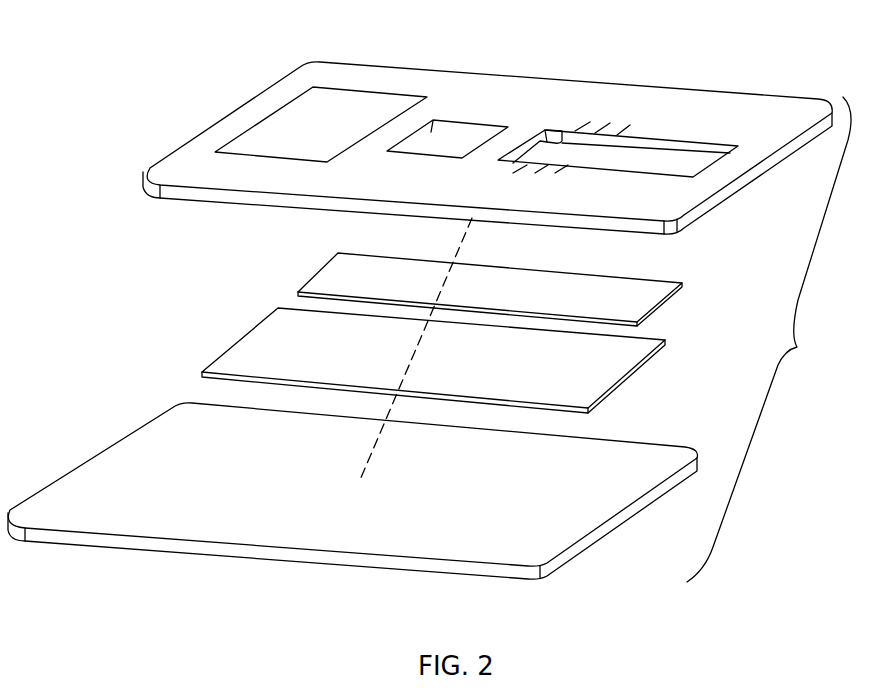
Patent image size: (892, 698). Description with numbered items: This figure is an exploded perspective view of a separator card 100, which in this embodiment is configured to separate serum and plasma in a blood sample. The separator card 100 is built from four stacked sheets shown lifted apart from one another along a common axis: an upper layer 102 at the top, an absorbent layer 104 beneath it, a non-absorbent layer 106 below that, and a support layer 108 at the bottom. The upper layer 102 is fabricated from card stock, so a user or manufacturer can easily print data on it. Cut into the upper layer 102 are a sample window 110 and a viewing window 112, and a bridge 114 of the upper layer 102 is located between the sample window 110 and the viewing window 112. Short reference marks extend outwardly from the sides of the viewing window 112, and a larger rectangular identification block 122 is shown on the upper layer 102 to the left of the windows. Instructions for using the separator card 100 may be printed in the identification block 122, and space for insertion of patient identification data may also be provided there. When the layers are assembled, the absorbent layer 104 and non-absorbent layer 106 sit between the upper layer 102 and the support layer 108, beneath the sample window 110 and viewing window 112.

The separator card 100 is at (769, 339).
The upper layer 102 is at (202, 132).
The absorbent layer 104 is at (328, 265).
The non-absorbent layer 106 is at (236, 343).
The support layer 108 is at (86, 462).
The sample window 110 is at (457, 121).
The viewing window 112 is at (680, 140).
The bridge 114 is at (549, 143).
The identification block 122 is at (297, 97).